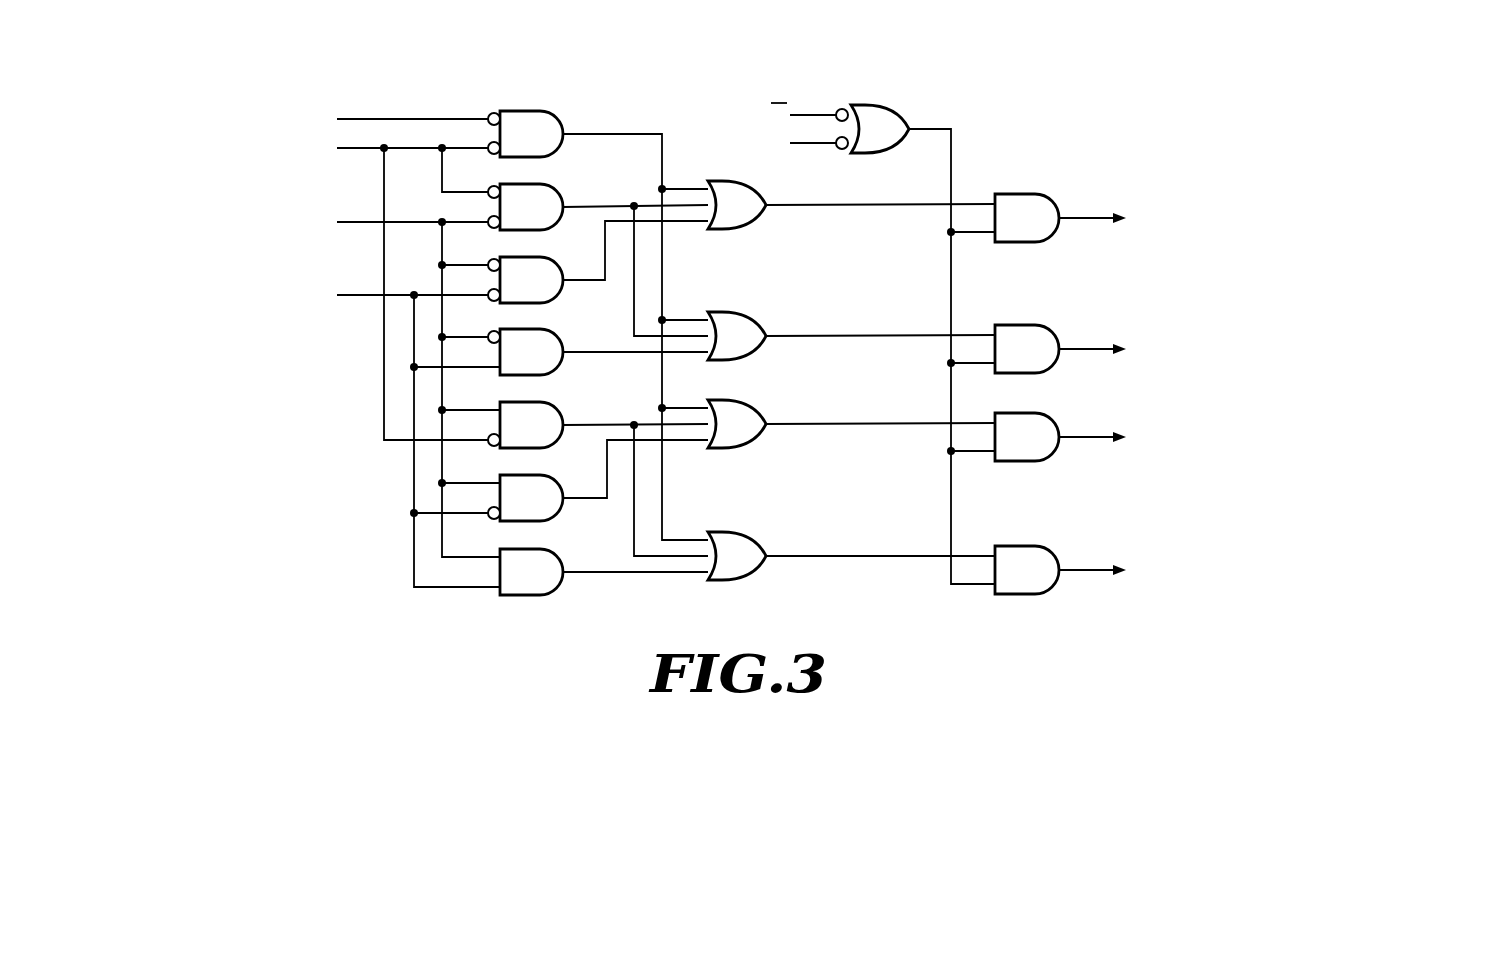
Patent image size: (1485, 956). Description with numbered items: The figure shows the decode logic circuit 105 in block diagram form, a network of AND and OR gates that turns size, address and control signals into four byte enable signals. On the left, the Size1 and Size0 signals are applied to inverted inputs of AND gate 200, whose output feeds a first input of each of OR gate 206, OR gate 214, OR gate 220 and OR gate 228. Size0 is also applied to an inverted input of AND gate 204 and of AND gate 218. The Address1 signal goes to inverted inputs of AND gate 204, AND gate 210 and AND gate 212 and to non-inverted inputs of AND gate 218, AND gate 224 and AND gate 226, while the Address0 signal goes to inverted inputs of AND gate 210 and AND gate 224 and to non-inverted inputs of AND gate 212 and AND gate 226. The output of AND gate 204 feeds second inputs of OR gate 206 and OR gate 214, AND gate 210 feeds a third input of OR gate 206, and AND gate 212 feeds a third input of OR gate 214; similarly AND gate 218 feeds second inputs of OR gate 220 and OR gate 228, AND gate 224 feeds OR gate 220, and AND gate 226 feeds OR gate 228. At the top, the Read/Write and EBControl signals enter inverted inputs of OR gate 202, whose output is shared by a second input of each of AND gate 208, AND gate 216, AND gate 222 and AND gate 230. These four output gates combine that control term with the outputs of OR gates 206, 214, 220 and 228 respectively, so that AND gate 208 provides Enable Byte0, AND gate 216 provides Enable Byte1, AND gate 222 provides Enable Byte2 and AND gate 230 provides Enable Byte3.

The decode logic circuit 105 is at (1180, 56).
The AND gate 200 is at (511, 146).
The OR gate 202 is at (885, 107).
The AND gate 204 is at (511, 219).
The OR gate 206 is at (740, 231).
The AND gate 208 is at (1005, 230).
The AND gate 210 is at (511, 292).
The AND gate 212 is at (511, 364).
The OR gate 214 is at (745, 362).
The AND gate 216 is at (1005, 361).
The AND gate 218 is at (511, 437).
The OR gate 220 is at (745, 450).
The AND gate 222 is at (1005, 449).
The AND gate 224 is at (511, 510).
The AND gate 226 is at (511, 584).
The OR gate 228 is at (745, 582).
The AND gate 230 is at (1005, 582).